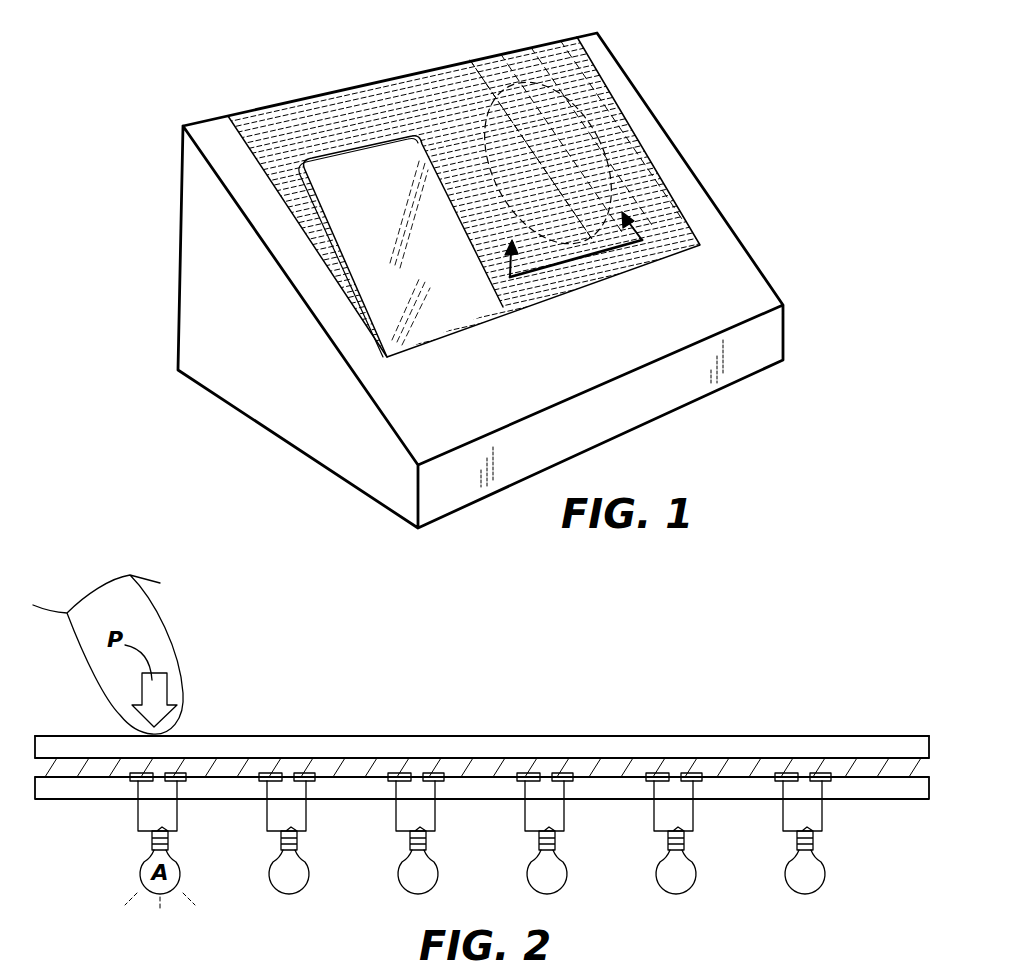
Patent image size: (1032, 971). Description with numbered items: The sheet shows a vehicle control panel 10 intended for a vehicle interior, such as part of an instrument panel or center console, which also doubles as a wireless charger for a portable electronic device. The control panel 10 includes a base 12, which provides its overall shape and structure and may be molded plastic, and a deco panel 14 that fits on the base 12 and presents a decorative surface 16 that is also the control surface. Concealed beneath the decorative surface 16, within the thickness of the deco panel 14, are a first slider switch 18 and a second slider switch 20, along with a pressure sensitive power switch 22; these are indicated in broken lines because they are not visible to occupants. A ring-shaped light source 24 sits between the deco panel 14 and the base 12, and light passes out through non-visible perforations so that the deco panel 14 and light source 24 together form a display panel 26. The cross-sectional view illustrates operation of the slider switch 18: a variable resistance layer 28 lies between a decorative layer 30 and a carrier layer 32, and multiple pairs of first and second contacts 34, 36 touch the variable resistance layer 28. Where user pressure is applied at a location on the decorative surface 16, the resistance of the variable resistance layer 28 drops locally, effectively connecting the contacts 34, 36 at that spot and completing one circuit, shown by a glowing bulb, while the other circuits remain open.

In FIG. 1, the vehicle control panel 10 is at (222, 79).
In FIG. 1, the base 12 is at (267, 405).
In FIG. 1, the deco panel 14 is at (312, 108).
In FIG. 1, the decorative surface 16 is at (352, 118).
In FIG. 2, the decorative surface 16 is at (423, 737).
In FIG. 1, the first slider switch 18 is at (604, 252).
In FIG. 2, the first slider switch 18 is at (772, 771).
In FIG. 1, the second slider switch 20 is at (432, 126).
In FIG. 1, the power switch 22 is at (547, 163).
In FIG. 1, the light source 24 is at (593, 157).
In FIG. 1, the display panel 26 is at (481, 85).
In FIG. 2, the variable resistance layer 28 is at (490, 765).
In FIG. 2, the decorative layer 30 is at (668, 752).
In FIG. 2, the carrier layer 32 is at (88, 787).
In FIG. 2, the first contact 34 is at (135, 773).
In FIG. 2, the second contact 36 is at (182, 782).